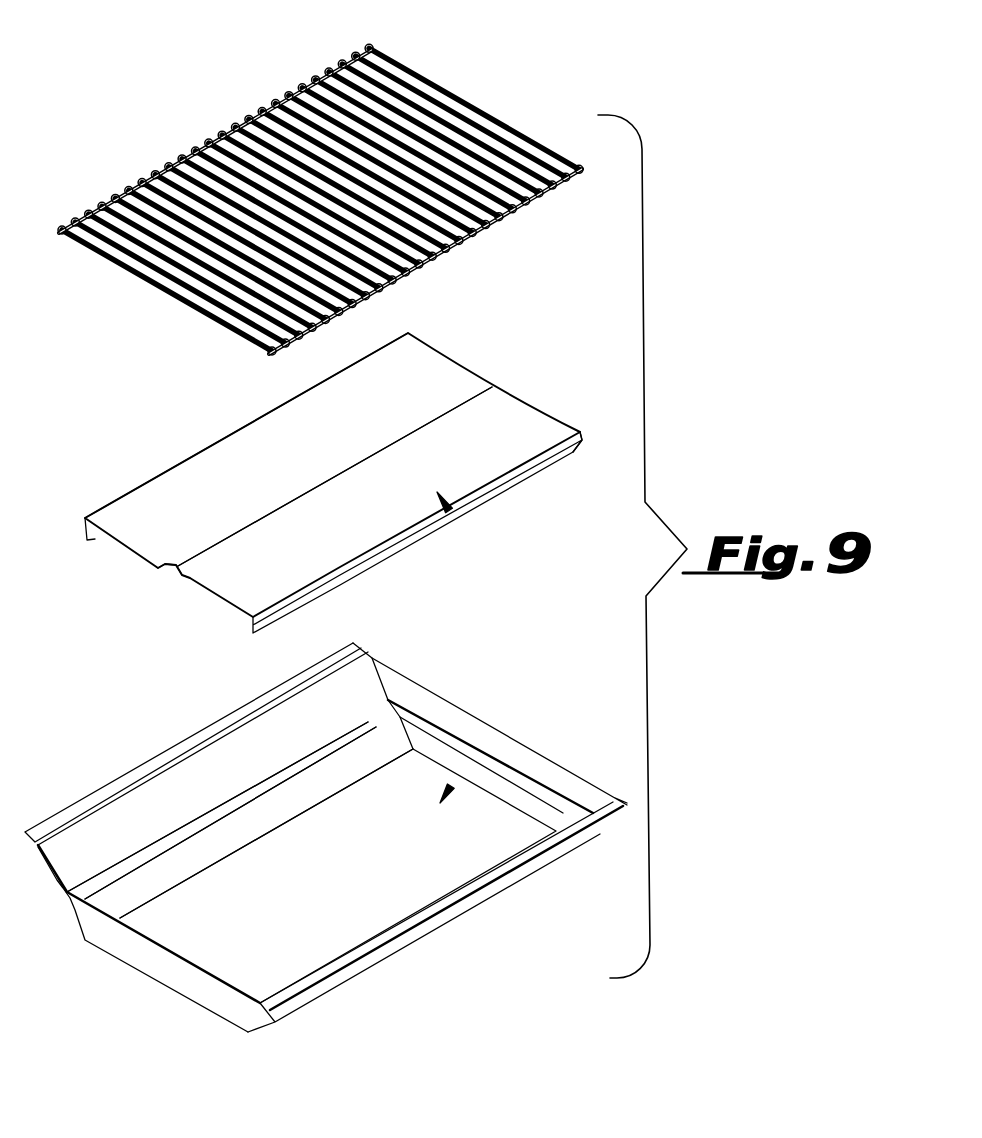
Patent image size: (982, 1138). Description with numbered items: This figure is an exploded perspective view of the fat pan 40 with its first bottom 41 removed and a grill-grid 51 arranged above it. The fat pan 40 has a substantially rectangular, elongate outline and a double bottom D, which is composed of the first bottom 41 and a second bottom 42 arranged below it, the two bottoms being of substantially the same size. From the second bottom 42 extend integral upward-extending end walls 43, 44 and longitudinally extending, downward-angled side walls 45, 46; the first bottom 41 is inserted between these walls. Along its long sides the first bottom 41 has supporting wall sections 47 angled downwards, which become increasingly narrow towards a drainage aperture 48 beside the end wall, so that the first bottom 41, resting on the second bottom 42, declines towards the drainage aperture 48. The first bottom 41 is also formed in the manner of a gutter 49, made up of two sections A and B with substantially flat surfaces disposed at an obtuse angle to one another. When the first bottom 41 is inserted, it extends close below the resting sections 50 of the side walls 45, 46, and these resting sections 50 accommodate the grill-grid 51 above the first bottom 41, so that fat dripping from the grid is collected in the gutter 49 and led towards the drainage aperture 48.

The fat pan 40 is at (326, 873).
The first bottom 41 is at (215, 580).
The second bottom 42 is at (235, 948).
The end wall 43 is at (132, 950).
The end wall 44 is at (563, 812).
The side wall 45 is at (110, 827).
The side wall 46 is at (373, 960).
The supporting wall sections 47 is at (97, 546).
The drainage aperture 48 is at (170, 568).
The gutter 49 is at (337, 475).
The resting sections 50 is at (380, 718).
The grill-grid 51 is at (477, 130).
The section A is at (183, 497).
The section B is at (267, 582).
The double bottom D is at (449, 510).